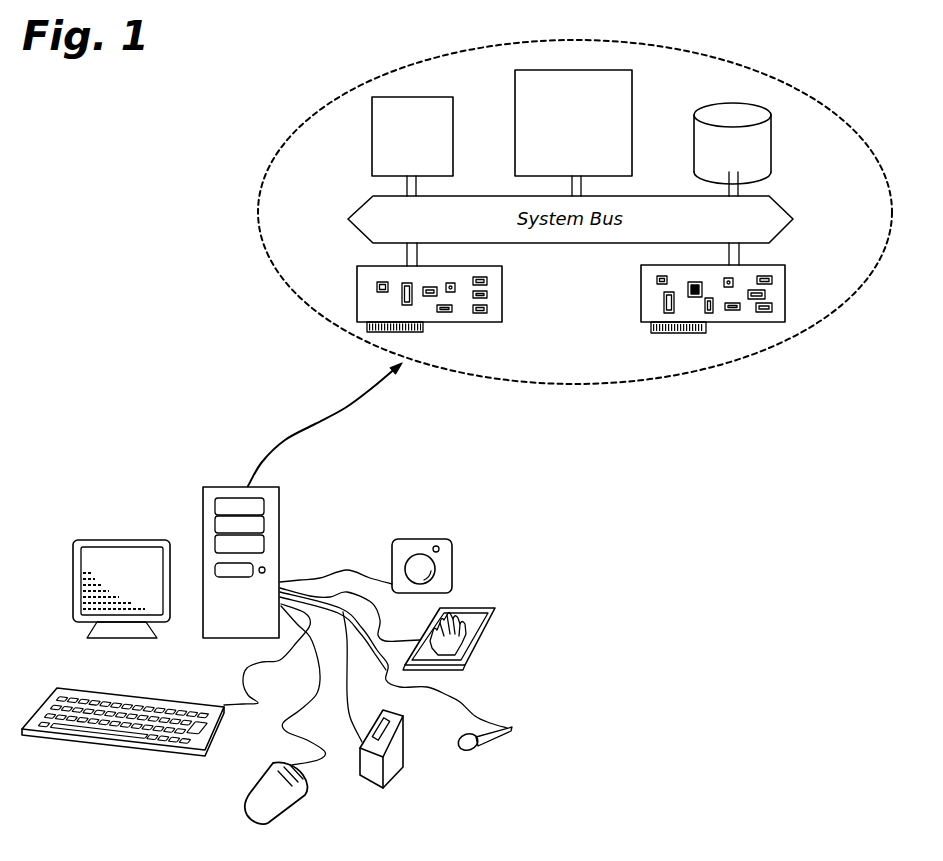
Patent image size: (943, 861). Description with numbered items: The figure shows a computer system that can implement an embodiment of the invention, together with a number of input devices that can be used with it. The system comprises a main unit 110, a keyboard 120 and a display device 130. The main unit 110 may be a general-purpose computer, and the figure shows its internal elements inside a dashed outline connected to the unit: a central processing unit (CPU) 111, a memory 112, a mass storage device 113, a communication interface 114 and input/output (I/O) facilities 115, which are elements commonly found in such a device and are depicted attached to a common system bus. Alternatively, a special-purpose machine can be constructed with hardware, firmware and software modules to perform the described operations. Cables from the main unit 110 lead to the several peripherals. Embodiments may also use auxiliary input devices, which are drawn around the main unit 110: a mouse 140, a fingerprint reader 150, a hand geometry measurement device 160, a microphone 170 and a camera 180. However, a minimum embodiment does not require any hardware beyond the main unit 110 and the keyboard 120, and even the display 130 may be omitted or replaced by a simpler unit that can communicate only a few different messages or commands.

The main unit 110 is at (241, 562).
The central processing unit 111 is at (412, 146).
The memory 112 is at (573, 133).
The mass storage device 113 is at (732, 149).
The communication interface 114 is at (430, 294).
The input/output facilities 115 is at (713, 293).
The keyboard 120 is at (166, 690).
The display device 130 is at (121, 589).
The mouse 140 is at (286, 715).
The fingerprint reader 150 is at (379, 710).
The hand geometry measurement device 160 is at (398, 629).
The microphone 170 is at (399, 678).
The camera 180 is at (387, 566).